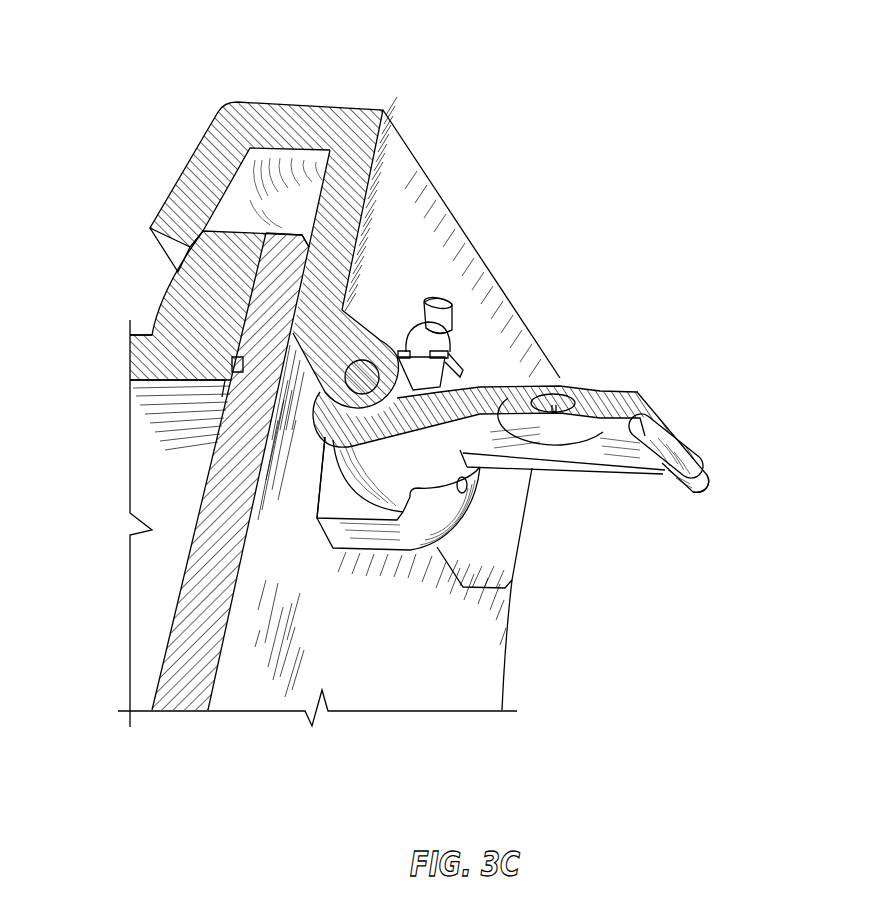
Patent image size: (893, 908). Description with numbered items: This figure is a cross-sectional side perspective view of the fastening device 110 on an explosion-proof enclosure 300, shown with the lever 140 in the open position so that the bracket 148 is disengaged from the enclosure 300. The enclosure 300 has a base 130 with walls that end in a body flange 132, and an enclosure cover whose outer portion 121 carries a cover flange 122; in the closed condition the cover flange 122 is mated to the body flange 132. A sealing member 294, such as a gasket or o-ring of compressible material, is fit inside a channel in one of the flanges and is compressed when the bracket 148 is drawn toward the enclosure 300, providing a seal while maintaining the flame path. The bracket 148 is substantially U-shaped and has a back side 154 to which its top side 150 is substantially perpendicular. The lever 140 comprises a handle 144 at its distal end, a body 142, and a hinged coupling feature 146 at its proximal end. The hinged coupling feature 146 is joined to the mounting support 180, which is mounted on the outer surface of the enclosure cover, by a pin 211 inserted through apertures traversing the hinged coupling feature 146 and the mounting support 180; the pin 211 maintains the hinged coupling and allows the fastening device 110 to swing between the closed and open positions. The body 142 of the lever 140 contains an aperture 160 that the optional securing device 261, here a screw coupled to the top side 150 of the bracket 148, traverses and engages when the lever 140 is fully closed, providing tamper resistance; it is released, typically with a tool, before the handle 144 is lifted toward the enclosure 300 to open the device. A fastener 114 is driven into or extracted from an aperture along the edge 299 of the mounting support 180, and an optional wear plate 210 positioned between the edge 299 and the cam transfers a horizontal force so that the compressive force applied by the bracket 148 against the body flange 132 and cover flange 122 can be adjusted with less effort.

The explosion-proof enclosure 300 is at (698, 90).
The bracket 148 is at (272, 155).
The back side 154 is at (287, 103).
The fastener 114 is at (438, 310).
The fastening device 110 is at (436, 316).
The edge 299 is at (462, 360).
The wear plate 210 is at (422, 362).
The pin 211 is at (368, 377).
The aperture 160 is at (575, 403).
The lever 140 is at (521, 435).
The handle 144 is at (706, 482).
The body 142 is at (620, 470).
The securing device 261 is at (552, 408).
The sealing member 294 is at (233, 366).
The body flange 132 is at (229, 303).
The cover flange 122 is at (296, 303).
The base 130 is at (182, 479).
The outer portion 121 is at (197, 430).
The hinged coupling feature 146 is at (363, 482).
The mounting support 180 is at (362, 540).
The top side 150 is at (503, 575).